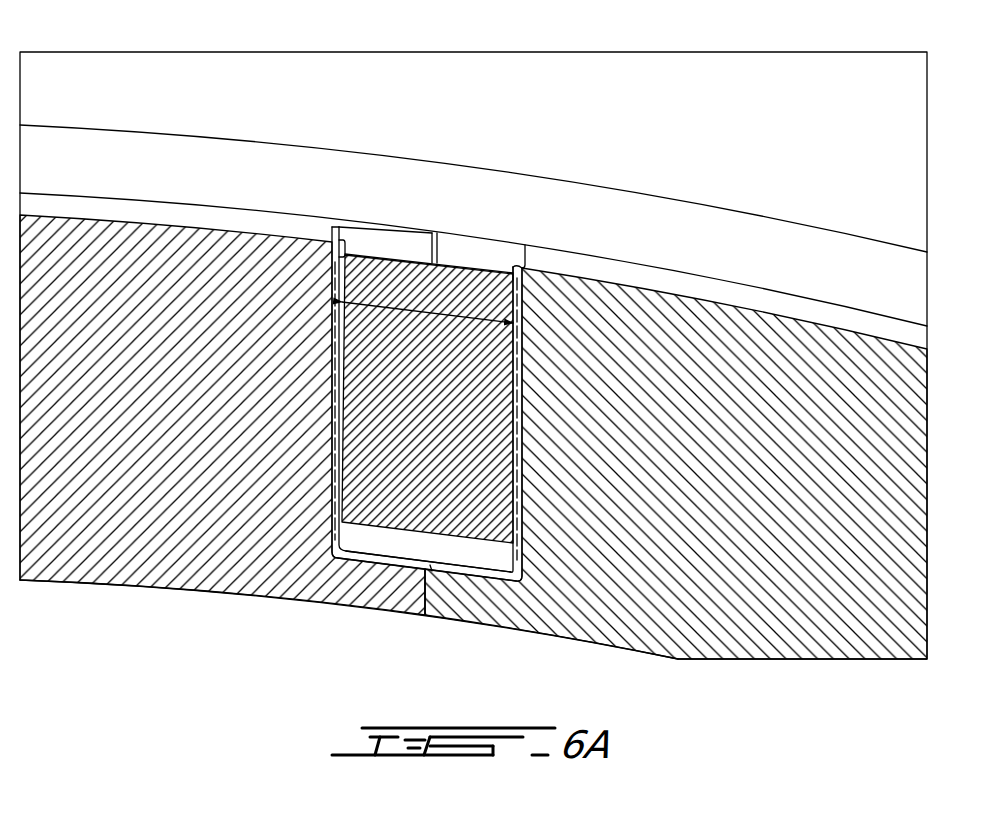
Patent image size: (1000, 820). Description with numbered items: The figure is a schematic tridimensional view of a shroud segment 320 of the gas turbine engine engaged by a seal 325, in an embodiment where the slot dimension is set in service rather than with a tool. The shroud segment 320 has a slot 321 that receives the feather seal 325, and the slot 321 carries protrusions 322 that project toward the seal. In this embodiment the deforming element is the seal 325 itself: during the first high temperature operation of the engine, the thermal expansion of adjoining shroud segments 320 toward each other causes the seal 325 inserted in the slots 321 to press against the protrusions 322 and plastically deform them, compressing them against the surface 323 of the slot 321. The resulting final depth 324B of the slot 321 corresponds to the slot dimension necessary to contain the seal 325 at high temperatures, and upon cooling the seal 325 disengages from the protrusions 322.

The shroud segment 320 is at (192, 176).
The slot 321 is at (376, 242).
The protrusions 322 is at (332, 283).
The surface of the slot 323 is at (333, 567).
The final depth of the slot 324B is at (425, 313).
The seal 325 is at (435, 233).